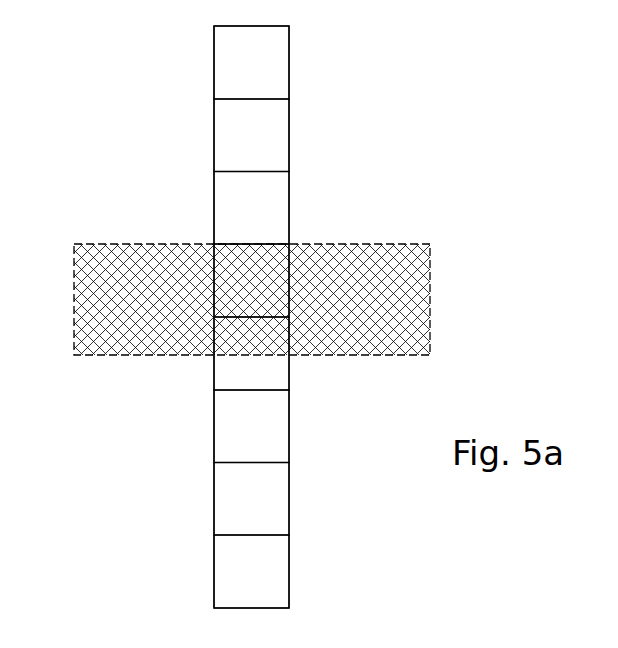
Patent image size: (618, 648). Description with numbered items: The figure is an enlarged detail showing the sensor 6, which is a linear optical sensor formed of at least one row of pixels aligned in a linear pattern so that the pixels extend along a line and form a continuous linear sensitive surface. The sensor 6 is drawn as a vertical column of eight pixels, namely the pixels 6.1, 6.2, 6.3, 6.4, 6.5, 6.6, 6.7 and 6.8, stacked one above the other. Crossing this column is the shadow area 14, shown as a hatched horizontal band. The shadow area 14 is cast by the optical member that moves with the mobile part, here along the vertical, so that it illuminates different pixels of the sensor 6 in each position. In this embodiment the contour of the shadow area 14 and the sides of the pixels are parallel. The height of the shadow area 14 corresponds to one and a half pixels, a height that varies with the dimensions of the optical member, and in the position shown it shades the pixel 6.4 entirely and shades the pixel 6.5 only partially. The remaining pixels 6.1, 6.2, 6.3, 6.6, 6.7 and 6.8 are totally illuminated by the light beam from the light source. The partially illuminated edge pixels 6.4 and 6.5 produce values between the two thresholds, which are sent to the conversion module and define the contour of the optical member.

The sensor 6 is at (305, 511).
The pixel 6.1 is at (281, 55).
The pixel 6.2 is at (281, 130).
The pixel 6.3 is at (281, 207).
The pixel 6.4 is at (226, 263).
The pixel 6.5 is at (220, 376).
The pixel 6.6 is at (281, 421).
The pixel 6.7 is at (220, 510).
The pixel 6.8 is at (281, 575).
The shadow area 14 is at (92, 313).